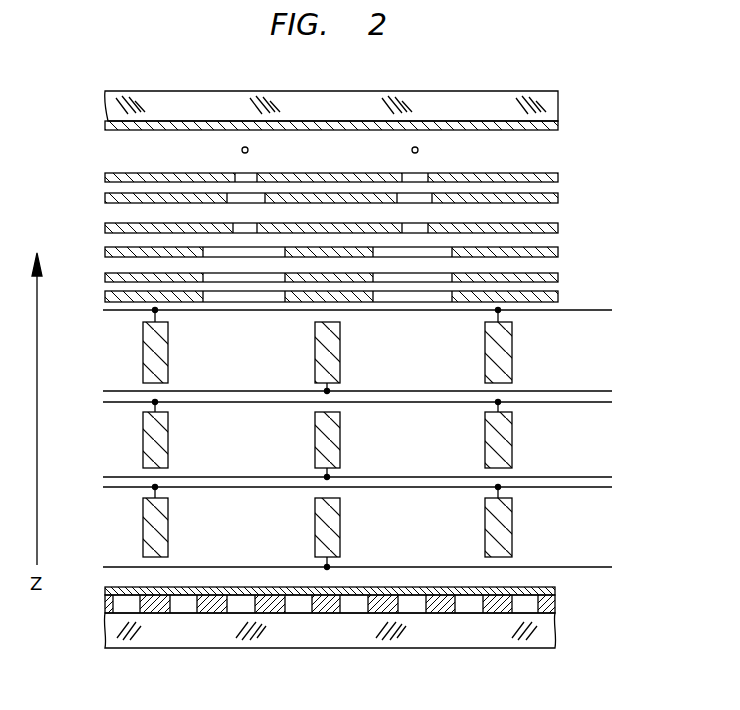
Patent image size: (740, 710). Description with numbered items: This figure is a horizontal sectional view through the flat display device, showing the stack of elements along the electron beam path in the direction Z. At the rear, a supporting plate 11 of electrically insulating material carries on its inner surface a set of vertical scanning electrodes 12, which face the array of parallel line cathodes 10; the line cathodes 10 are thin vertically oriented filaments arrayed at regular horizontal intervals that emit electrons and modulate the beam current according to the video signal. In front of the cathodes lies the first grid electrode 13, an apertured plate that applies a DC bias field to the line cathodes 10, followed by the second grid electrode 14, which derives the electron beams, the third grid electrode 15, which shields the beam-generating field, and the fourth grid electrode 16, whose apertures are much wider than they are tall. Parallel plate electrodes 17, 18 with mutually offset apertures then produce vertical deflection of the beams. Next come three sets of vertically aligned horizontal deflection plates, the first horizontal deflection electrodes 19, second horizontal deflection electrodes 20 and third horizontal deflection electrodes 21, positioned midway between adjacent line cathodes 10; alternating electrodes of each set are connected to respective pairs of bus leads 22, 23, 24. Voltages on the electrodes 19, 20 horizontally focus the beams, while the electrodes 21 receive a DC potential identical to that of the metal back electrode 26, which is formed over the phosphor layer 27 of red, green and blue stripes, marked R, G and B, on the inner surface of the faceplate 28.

The line cathodes 10 is at (418, 150).
The supporting plate 11 is at (558, 104).
The vertical scanning electrodes 12 is at (558, 127).
The first grid electrode 13 is at (558, 175).
The second grid electrode 14 is at (558, 200).
The third grid electrode 15 is at (558, 228).
The fourth grid electrode 16 is at (558, 252).
The parallel plate electrode 17 is at (558, 277).
The parallel plate electrode 18 is at (558, 297).
The DH-1 electrodes 19 is at (507, 352).
The DH-2 electrodes 20 is at (507, 441).
The DH-3 electrodes 21 is at (507, 531).
The bus leads 22 is at (604, 314).
The bus leads 23 is at (604, 405).
The bus leads 24 is at (604, 490).
The metal back electrode 26 is at (555, 589).
The phosphor layer 27 is at (555, 606).
The faceplate 28 is at (553, 636).